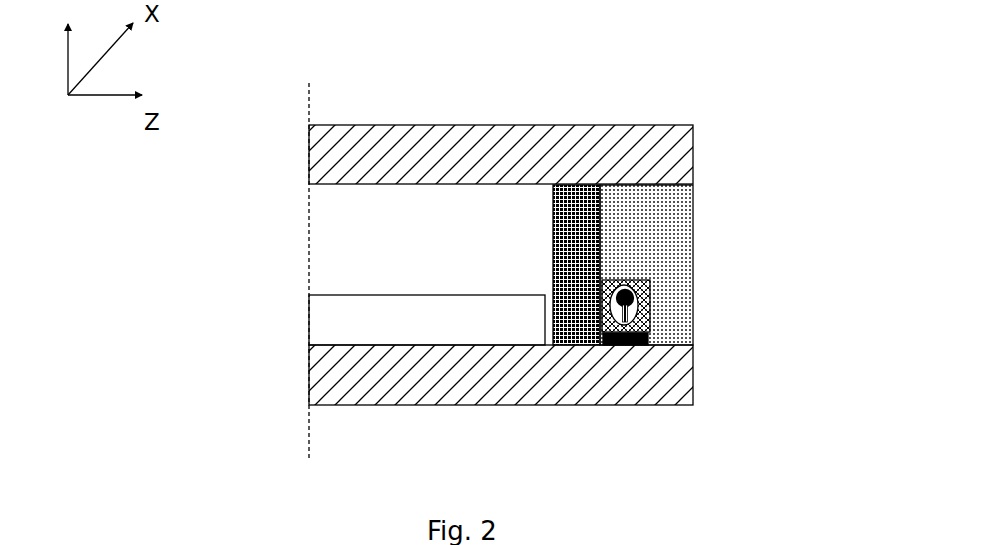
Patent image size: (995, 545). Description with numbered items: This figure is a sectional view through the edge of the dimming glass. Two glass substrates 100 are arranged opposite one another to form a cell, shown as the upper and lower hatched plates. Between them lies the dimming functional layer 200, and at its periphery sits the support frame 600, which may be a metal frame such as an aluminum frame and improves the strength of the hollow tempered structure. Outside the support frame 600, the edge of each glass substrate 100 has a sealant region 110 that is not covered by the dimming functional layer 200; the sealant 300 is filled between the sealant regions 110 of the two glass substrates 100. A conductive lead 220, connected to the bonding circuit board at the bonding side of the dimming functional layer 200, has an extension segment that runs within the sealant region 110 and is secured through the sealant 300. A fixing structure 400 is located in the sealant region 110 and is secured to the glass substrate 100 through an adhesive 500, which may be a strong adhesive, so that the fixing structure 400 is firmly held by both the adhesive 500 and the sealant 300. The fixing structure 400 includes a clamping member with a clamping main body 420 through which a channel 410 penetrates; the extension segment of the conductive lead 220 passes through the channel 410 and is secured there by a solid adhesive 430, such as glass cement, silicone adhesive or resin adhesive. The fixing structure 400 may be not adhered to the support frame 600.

The glass substrate 100 is at (670, 370).
The sealant region 110 is at (602, 145).
The dimming functional layer 200 is at (333, 318).
The conductive lead 220 is at (638, 300).
The sealant 300 is at (662, 221).
The fixing structure 400 is at (722, 270).
The channel 410 is at (634, 306).
The clamping main body 420 is at (631, 293).
The solid adhesive 430 is at (650, 314).
The adhesive 500 is at (650, 341).
The support frame 600 is at (567, 185).